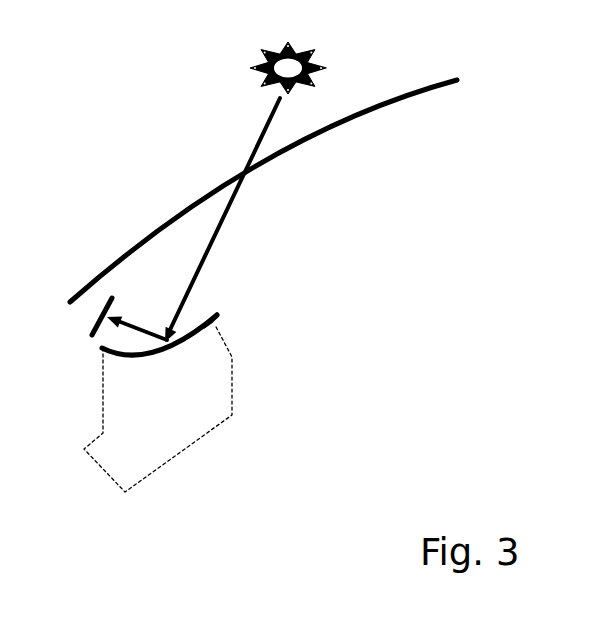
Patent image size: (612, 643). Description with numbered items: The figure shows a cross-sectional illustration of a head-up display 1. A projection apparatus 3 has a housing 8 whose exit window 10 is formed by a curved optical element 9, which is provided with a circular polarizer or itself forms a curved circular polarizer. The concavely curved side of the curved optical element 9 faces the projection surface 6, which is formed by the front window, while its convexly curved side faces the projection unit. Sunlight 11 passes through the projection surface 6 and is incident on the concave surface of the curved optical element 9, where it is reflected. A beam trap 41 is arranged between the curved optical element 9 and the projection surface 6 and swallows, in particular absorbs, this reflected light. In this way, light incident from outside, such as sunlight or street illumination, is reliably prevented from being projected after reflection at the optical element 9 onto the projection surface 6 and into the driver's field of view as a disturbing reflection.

The head-up display 1 is at (146, 129).
The projection apparatus 3 is at (176, 378).
The projection surface 6 is at (418, 100).
The housing 8 is at (232, 382).
The curved optical element 9 is at (226, 311).
The exit window 10 is at (153, 367).
The sunlight 11 is at (298, 44).
The beam trap 41 is at (90, 334).